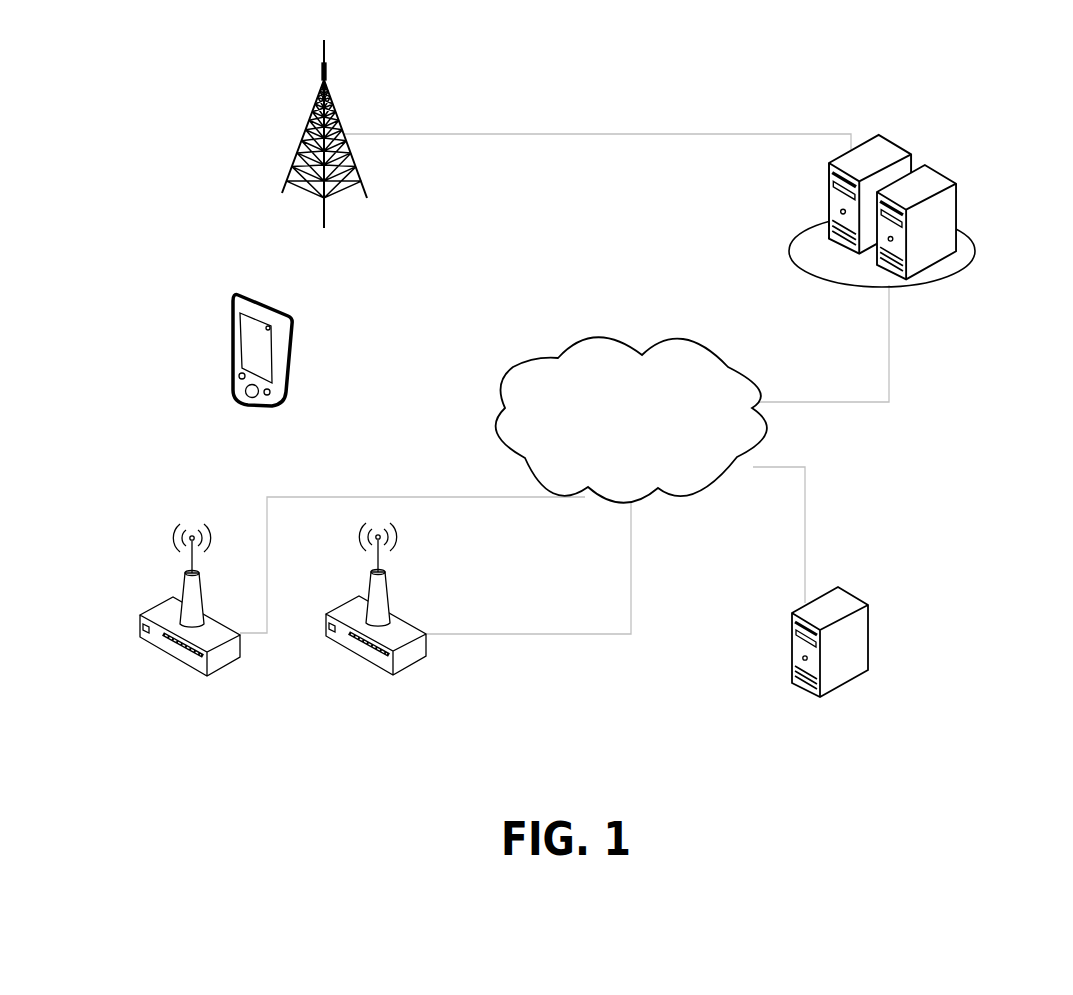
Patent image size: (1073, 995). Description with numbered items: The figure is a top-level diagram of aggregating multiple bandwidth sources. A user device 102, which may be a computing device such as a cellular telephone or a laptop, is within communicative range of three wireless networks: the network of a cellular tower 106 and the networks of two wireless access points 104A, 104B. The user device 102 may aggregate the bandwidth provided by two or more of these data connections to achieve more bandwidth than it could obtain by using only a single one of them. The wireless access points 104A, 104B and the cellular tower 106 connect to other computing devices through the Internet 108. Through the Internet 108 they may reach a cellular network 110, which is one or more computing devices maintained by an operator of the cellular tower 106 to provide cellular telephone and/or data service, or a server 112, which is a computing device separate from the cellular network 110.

The user device 102 is at (280, 408).
The wireless access point 104A is at (205, 677).
The wireless access point 104B is at (392, 673).
The cellular tower 106 is at (366, 195).
The Internet 108 is at (699, 432).
The cellular network 110 is at (992, 354).
The server 112 is at (820, 695).